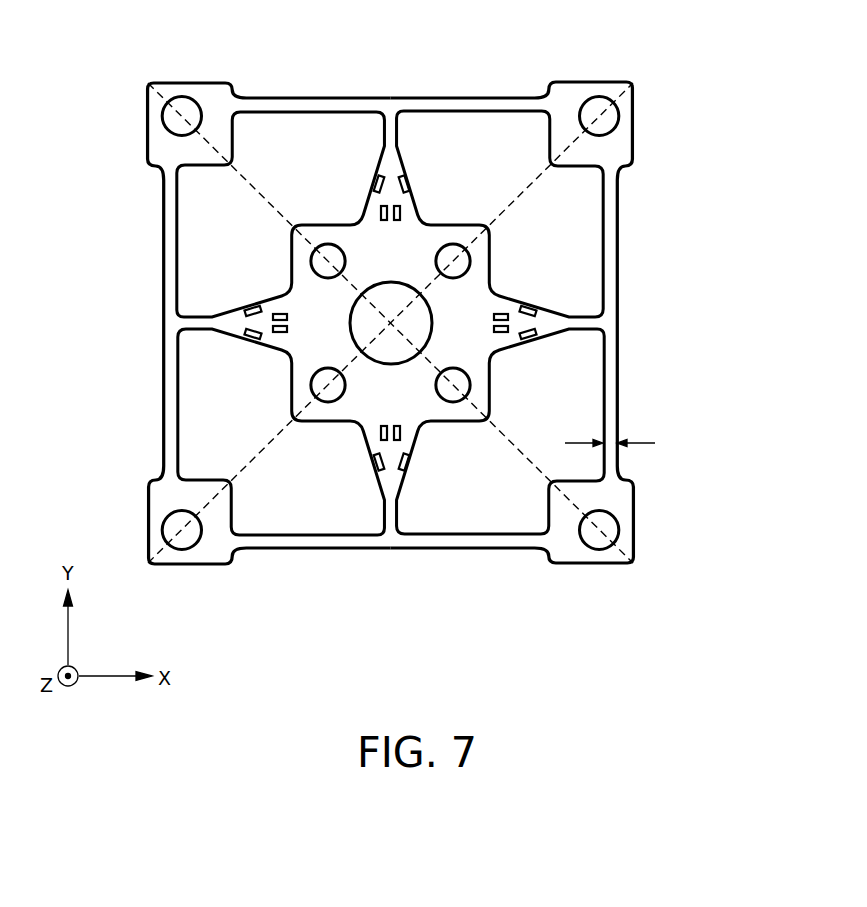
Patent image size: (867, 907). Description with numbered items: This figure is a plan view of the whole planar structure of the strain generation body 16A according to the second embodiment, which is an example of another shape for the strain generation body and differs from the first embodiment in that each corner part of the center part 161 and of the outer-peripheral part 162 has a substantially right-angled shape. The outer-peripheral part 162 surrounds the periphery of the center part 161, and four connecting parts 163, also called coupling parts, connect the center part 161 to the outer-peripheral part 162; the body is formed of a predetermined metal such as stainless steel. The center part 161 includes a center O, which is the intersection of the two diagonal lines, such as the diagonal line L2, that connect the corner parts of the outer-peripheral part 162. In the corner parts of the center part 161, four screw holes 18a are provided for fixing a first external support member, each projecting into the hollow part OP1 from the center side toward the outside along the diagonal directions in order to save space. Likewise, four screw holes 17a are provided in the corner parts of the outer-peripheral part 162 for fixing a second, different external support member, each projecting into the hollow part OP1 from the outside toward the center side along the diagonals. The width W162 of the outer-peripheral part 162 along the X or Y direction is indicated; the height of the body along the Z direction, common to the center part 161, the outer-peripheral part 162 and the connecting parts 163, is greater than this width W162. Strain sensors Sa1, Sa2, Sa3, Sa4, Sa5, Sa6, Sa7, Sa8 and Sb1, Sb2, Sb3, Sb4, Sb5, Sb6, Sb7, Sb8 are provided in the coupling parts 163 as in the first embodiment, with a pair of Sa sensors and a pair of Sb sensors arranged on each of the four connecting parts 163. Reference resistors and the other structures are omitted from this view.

The strain generation body 16A is at (551, 646).
The center part 161 is at (413, 312).
The outer-peripheral part 162 is at (615, 391).
The connecting part 163 is at (237, 323).
The width of the outer-peripheral part W162 is at (618, 440).
The screw hole 17a is at (186, 97).
The screw hole 18a is at (331, 245).
The hollow part OP1 is at (505, 135).
The diagonal line L2 is at (246, 186).
The center O is at (391, 323).
The strain sensor Sa1 is at (506, 314).
The strain sensor Sa2 is at (506, 331).
The strain sensor Sa3 is at (408, 452).
The strain sensor Sa4 is at (374, 452).
The strain sensor Sa5 is at (277, 329).
The strain sensor Sa6 is at (277, 315).
The strain sensor Sa7 is at (373, 192).
The strain sensor Sa8 is at (409, 192).
The strain sensor Sb1 is at (523, 306).
The strain sensor Sb2 is at (523, 338).
The strain sensor Sb3 is at (398, 441).
The strain sensor Sb4 is at (384, 441).
The strain sensor Sb5 is at (260, 336).
The strain sensor Sb6 is at (260, 308).
The strain sensor Sb7 is at (382, 205).
The strain sensor Sb8 is at (399, 205).